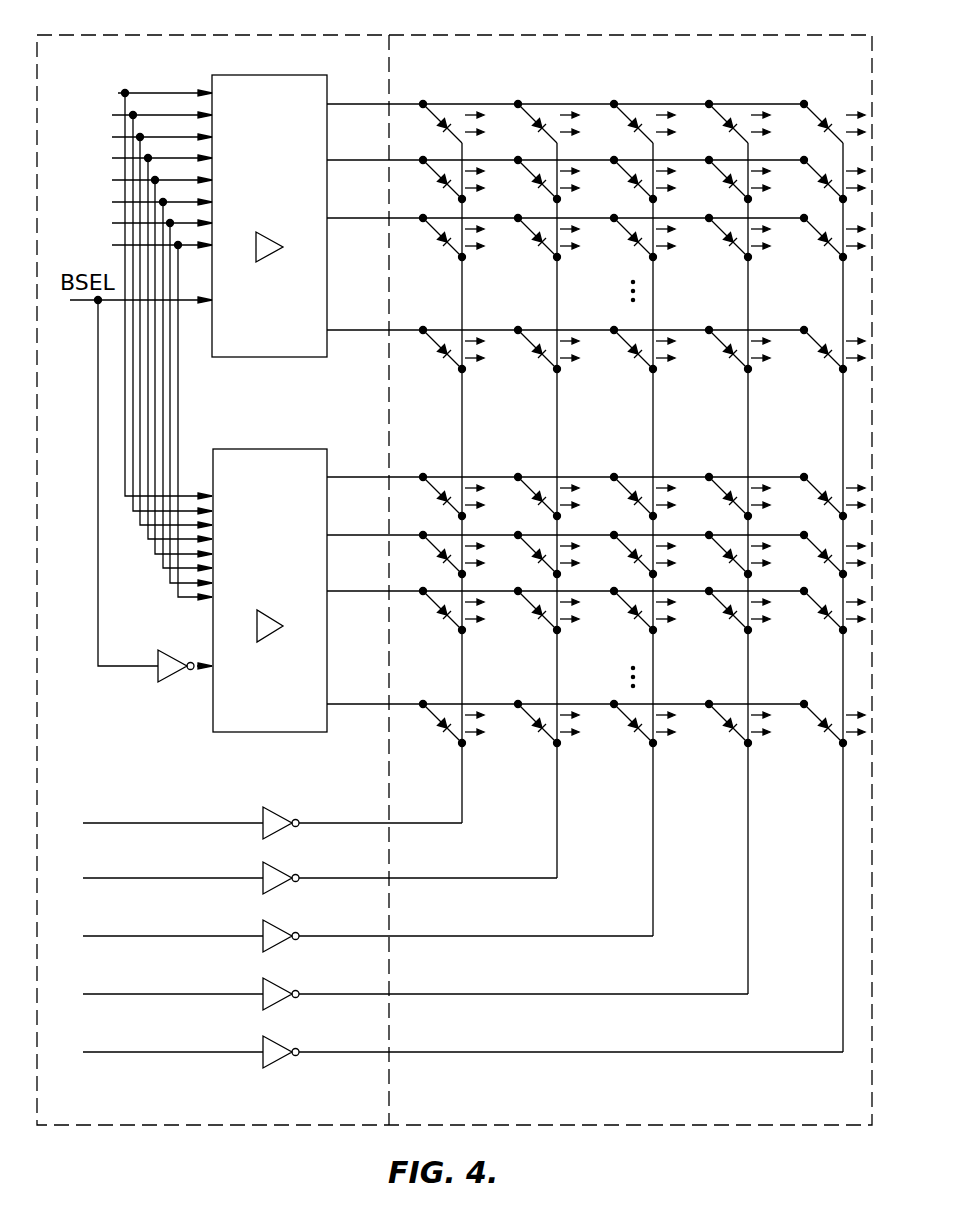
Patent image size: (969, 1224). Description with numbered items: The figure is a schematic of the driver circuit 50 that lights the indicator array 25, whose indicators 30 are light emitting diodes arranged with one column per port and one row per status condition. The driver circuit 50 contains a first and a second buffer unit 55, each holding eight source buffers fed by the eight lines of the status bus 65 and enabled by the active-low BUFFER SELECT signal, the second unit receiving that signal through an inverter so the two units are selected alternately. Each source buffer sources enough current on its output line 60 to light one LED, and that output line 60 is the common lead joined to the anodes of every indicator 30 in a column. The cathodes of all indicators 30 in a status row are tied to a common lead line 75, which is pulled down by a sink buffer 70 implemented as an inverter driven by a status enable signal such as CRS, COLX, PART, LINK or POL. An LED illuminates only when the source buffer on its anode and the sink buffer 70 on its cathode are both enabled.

The driver circuit 50 is at (258, 34).
The indicator array 25 is at (705, 35).
The buffer unit 55 is at (268, 75).
The status bus 65 is at (92, 251).
The output line 60 is at (333, 104).
The indicator 30 is at (628, 577).
The sink buffer 70 is at (270, 808).
The lead line 75 is at (336, 822).